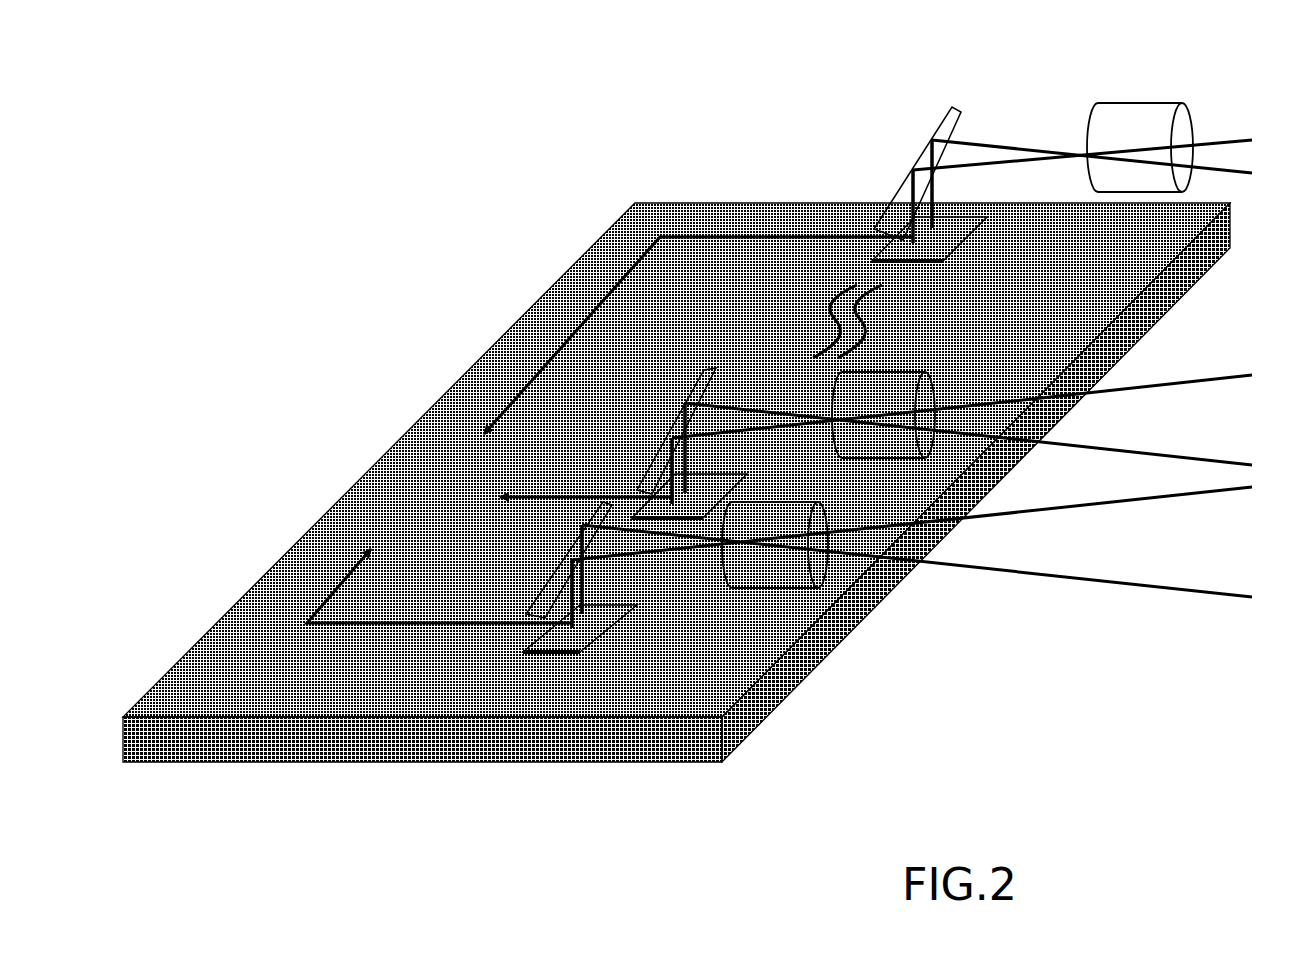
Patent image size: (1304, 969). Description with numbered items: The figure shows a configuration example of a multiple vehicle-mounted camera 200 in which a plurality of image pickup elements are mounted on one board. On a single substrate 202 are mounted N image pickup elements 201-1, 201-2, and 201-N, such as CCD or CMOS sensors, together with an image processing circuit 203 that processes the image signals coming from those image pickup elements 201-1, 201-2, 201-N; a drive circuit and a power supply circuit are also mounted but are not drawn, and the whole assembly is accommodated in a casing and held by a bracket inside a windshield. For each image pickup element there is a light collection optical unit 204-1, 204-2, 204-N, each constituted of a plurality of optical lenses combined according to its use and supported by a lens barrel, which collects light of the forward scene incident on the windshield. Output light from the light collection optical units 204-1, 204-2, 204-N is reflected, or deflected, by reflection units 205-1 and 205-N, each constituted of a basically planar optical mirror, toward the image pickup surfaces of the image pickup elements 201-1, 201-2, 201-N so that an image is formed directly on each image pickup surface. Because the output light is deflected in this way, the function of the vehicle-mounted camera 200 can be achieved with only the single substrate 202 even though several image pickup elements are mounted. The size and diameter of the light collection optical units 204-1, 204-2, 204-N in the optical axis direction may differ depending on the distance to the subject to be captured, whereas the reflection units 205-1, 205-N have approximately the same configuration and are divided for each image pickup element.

The vehicle-mounted camera 200 is at (546, 836).
The image pickup element 201-1 is at (598, 653).
The image pickup element 201-2 is at (737, 480).
The image pickup element 201-N is at (967, 262).
The substrate 202 is at (186, 653).
The image processing circuit 203 is at (377, 463).
The light collection optical unit 204-1 is at (752, 577).
The light collection optical unit 204-2 is at (900, 380).
The light collection optical unit 204-N is at (1142, 118).
The reflection unit 205-1 is at (690, 395).
The reflection unit 205-N is at (937, 122).